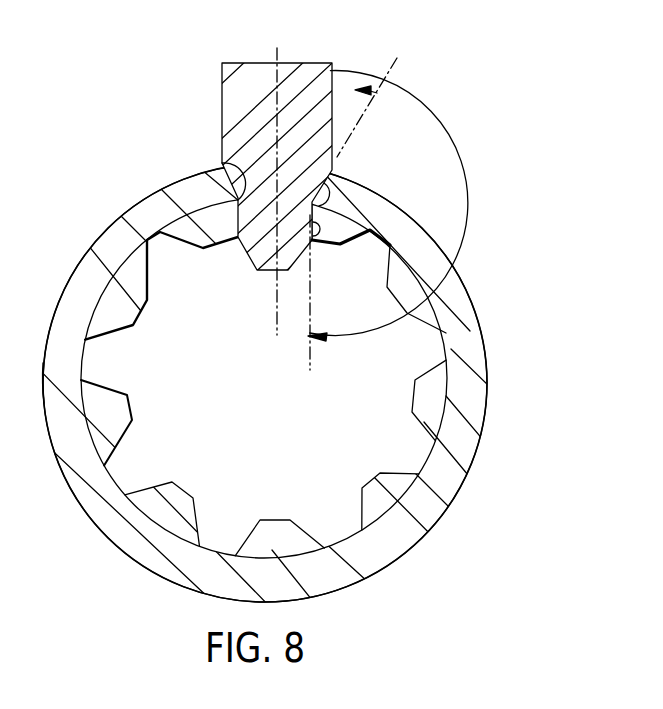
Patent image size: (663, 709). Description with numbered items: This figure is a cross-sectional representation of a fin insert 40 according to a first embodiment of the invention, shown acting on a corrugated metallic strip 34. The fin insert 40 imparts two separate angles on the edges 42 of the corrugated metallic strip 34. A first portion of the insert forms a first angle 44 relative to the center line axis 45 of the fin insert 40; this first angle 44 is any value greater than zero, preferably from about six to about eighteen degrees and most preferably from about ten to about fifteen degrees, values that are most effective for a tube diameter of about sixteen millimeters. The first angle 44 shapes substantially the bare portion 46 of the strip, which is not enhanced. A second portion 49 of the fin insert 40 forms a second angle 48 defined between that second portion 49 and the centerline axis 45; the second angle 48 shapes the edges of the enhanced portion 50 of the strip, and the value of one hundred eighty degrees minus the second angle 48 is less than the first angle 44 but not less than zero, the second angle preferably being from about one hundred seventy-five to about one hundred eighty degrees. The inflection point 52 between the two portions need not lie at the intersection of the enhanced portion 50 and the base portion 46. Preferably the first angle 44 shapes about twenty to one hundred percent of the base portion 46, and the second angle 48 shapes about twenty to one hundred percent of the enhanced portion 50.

The corrugated metallic strip 34 is at (502, 415).
The fin insert 40 is at (237, 117).
The edges of the corrugated metallic strip 42 is at (347, 190).
The first angle 44 is at (352, 88).
The center line axis of the fin insert 45 is at (284, 92).
The bare portion (base portion) of the strip 46 is at (449, 302).
The second angle 48 is at (464, 180).
The second portion of the fin insert 49 is at (332, 243).
The enhanced portion of the strip 50 is at (46, 342).
The inflection point 52 is at (221, 163).